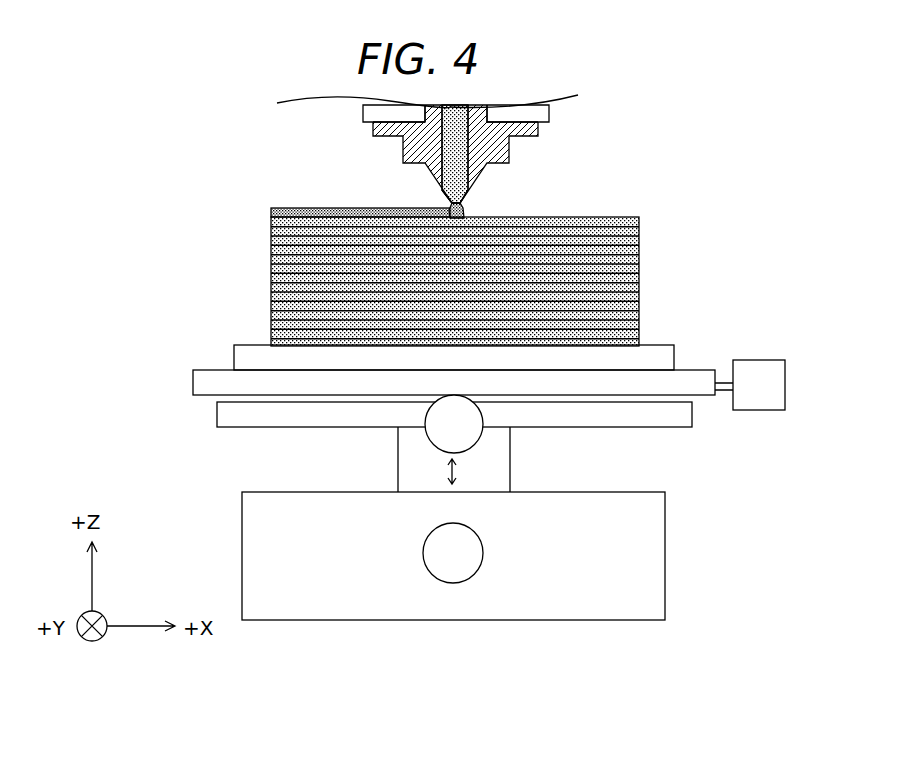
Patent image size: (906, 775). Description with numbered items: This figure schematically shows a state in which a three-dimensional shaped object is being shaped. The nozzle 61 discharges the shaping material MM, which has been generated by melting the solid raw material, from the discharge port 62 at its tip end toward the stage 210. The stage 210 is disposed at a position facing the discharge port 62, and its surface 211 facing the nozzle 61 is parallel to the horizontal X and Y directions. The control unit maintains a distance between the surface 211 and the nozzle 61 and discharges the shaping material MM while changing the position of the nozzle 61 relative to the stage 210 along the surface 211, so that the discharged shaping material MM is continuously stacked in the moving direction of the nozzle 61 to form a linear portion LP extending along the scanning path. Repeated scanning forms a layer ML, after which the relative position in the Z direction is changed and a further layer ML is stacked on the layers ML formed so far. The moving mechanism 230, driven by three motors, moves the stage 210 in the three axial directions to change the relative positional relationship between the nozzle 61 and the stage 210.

The nozzle 61 is at (380, 158).
The discharge port 62 is at (450, 198).
The stage 210 is at (657, 360).
The surface 211 is at (647, 347).
The moving mechanism 230 is at (707, 485).
The shaping material MM is at (467, 138).
The linear portion LP is at (302, 207).
The layer ML is at (270, 276).